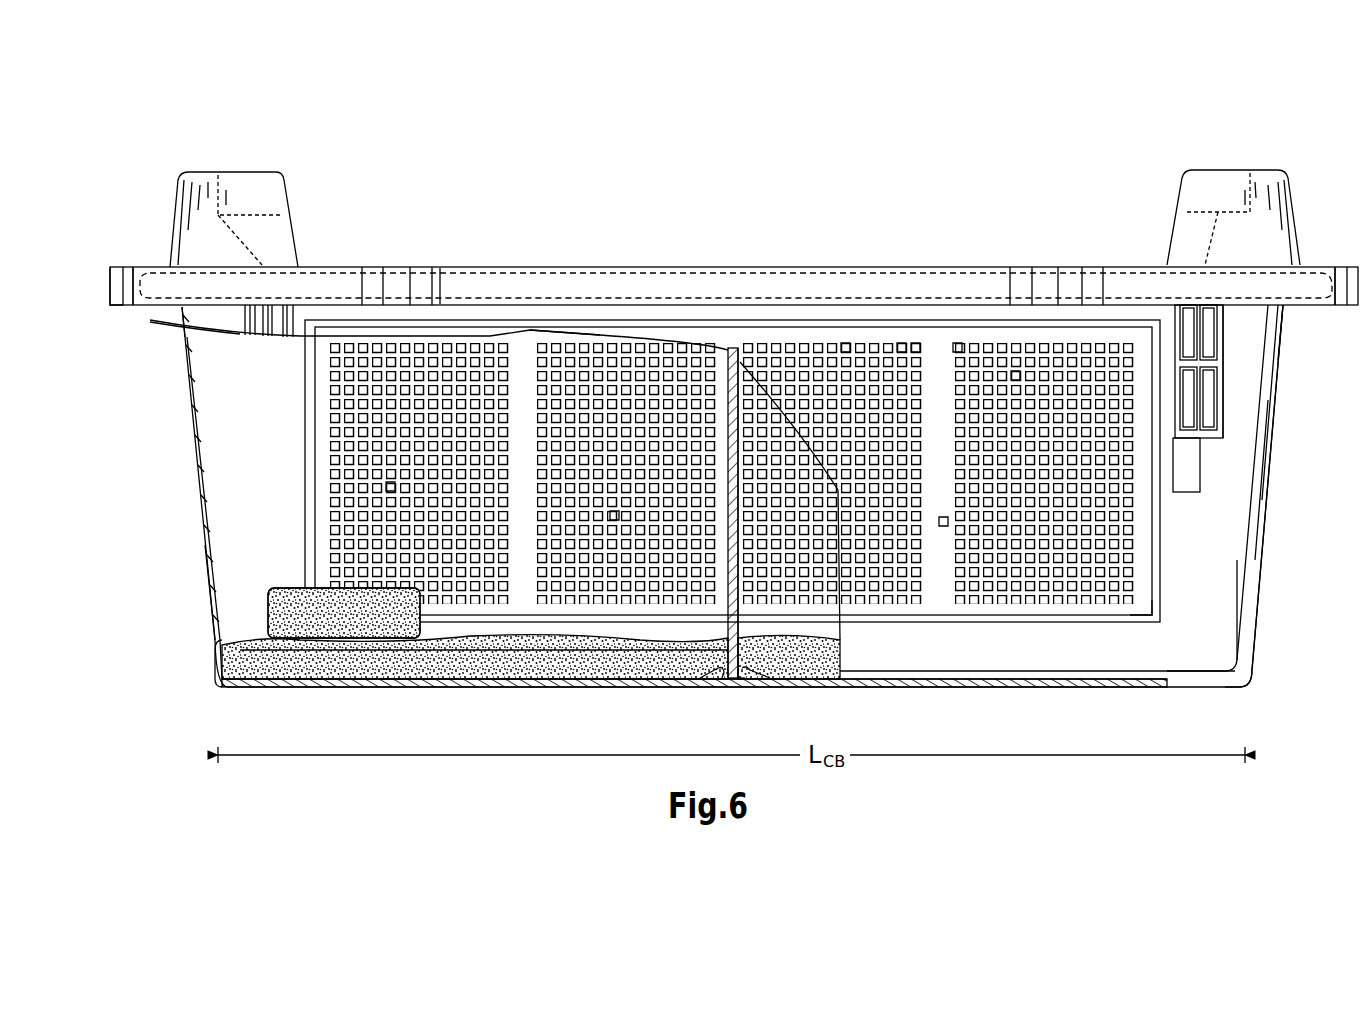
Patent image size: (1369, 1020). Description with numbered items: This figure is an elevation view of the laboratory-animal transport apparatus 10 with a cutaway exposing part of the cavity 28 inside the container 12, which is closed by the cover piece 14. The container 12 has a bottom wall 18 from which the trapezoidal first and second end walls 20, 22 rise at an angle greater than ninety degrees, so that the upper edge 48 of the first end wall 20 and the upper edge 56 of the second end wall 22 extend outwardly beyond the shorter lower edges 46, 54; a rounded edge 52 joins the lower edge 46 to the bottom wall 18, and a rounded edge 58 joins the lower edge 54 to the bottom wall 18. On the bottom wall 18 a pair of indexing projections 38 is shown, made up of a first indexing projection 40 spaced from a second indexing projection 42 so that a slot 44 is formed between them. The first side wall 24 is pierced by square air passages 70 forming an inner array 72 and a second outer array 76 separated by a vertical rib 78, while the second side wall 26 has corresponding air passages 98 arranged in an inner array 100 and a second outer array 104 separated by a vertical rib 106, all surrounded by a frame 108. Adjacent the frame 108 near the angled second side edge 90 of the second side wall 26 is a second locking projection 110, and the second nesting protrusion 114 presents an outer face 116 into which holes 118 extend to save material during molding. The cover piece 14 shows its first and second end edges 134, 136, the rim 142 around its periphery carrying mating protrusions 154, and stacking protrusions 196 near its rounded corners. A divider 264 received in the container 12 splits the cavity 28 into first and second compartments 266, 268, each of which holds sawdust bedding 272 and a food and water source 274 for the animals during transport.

The apparatus 10 is at (210, 126).
The container 12 is at (200, 514).
The cover piece 14 is at (205, 258).
The bottom wall 18 is at (530, 690).
The first end wall 20 is at (230, 583).
The second end wall 22 is at (1268, 496).
The first side wall 24 is at (243, 380).
The second side wall 26 is at (1183, 600).
The cavity 28 is at (708, 471).
The indexing projections 38 is at (744, 686).
The first indexing projection 40 is at (712, 680).
The second indexing projection 42 is at (755, 683).
The slot 44 is at (742, 636).
The lower edge 46 is at (218, 655).
The upper edge 48 is at (180, 312).
The rounded edge 52 is at (238, 677).
The lower edge 54 is at (1248, 668).
The upper edge 56 is at (1284, 308).
The rounded edge 58 is at (1244, 687).
The air passages 70 is at (331, 430).
The inner array 72 is at (614, 522).
The second outer array 76 is at (383, 490).
The vertical rib 78 is at (525, 415).
The second side edge 90 is at (1240, 546).
The air passages 98 is at (957, 344).
The inner array 100 is at (843, 368).
The second outer array 104 is at (1020, 383).
The vertical rib 106 is at (948, 527).
The frame 108 is at (1158, 622).
The second locking projection 110 is at (1185, 490).
The second nesting protrusion 114 is at (1224, 340).
The outer face 116 is at (1223, 437).
The holes 118 is at (1206, 345).
The first end edge 134 is at (158, 266).
The second end edge 136 is at (1310, 265).
The rim 142 is at (118, 290).
The mating protrusions 154 is at (442, 268).
The stacking protrusions 196 is at (184, 164).
The divider 264 is at (728, 612).
The first compartment 266 is at (470, 620).
The second compartment 268 is at (815, 626).
The sawdust bedding 272 is at (300, 660).
The food and water source 274 is at (300, 607).